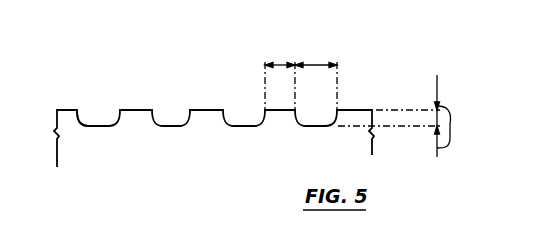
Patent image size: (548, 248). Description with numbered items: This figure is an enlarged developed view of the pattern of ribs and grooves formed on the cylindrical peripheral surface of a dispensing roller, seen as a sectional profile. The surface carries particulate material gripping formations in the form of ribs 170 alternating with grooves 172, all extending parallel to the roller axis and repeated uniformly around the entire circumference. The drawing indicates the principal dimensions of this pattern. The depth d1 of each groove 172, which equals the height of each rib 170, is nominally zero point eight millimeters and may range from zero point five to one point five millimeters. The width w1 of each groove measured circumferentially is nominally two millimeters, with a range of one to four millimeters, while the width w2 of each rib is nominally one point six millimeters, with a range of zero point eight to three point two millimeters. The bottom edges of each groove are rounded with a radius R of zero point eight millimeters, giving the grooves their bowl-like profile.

The rib 170 is at (137, 110).
The groove 172 is at (100, 127).
The radius R is at (102, 104).
The groove width w1 is at (318, 65).
The rib width w2 is at (280, 65).
The groove depth d1 is at (438, 102).